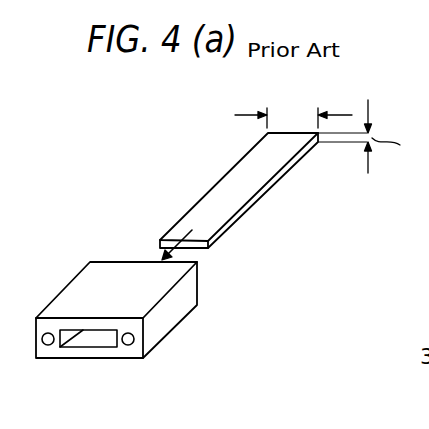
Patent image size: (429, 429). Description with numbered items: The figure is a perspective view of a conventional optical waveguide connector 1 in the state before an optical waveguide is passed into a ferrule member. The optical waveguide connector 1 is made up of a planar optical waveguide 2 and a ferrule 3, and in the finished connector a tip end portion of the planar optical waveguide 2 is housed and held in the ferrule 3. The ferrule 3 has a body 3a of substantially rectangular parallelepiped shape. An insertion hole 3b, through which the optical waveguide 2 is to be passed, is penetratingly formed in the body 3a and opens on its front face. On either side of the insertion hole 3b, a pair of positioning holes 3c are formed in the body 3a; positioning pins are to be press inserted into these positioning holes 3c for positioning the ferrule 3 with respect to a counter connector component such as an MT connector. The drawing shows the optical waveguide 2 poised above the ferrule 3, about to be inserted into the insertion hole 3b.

The optical waveguide connector 1 is at (272, 263).
The planar optical waveguide 2 is at (222, 213).
The ferrule 3 is at (175, 316).
The body 3a is at (83, 268).
The insertion hole 3b is at (85, 337).
The positioning holes 3c is at (43, 352).